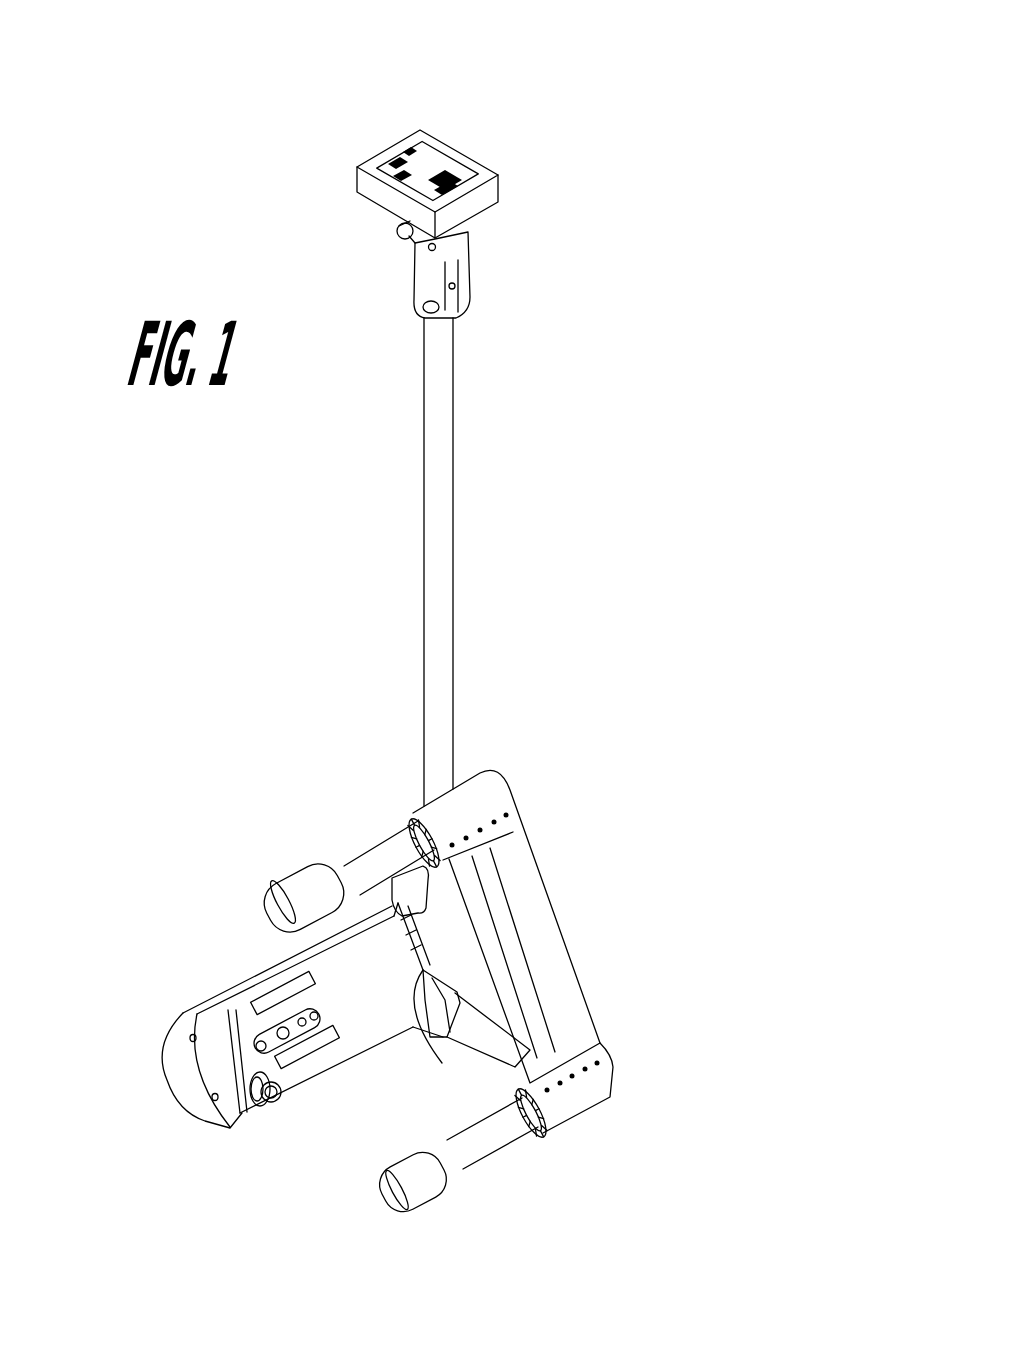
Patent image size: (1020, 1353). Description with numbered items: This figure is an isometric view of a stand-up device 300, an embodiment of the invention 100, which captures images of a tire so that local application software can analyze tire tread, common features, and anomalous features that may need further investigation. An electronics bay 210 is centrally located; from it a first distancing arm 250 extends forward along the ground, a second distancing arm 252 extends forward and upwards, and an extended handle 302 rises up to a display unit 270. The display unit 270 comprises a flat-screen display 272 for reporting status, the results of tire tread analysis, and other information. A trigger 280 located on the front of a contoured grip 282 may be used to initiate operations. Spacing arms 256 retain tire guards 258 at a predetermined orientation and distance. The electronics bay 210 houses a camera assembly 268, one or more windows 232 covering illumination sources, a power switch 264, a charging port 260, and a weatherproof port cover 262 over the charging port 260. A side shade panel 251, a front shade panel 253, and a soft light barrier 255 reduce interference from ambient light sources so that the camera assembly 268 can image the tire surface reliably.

The invention 100 is at (267, 220).
The electronics bay 210 is at (160, 1078).
The windows 232 is at (275, 995).
The first distancing arm 250 is at (512, 1143).
The side shade panel 251 is at (442, 1063).
The second distancing arm 252 is at (350, 850).
The front shade panel 253 is at (573, 961).
The soft light barrier 255 is at (538, 1018).
The spacing arms 256 is at (480, 1010).
The tire guards 258 is at (343, 872).
The charging port 260 is at (250, 1087).
The weatherproof port cover 262 is at (245, 1045).
The power switch 264 is at (283, 1103).
The camera assembly 268 is at (393, 975).
The display unit 270 is at (458, 143).
The flat-screen display 272 is at (433, 147).
The trigger 280 is at (393, 233).
The contoured grip 282 is at (478, 258).
The stand-up device 300 is at (674, 134).
The extended handle 302 is at (418, 518).